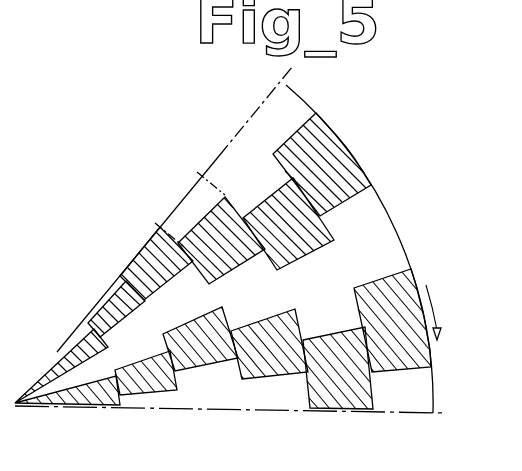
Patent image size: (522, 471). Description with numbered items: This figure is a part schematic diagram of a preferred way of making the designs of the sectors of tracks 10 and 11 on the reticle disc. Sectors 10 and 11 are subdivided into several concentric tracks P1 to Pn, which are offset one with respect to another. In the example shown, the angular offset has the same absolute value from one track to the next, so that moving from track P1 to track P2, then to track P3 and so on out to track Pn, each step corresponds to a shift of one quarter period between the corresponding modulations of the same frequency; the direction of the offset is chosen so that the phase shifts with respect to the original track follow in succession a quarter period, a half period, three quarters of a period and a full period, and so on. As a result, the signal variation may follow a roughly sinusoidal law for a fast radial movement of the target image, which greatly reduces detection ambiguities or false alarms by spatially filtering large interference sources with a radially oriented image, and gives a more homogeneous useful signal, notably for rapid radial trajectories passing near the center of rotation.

The sector of track 10 is at (377, 221).
The sector of track 11 is at (336, 142).
The concentric track P1 is at (56, 366).
The concentric track P2 is at (90, 325).
The concentric track P3 is at (125, 282).
The concentric track Pn is at (266, 146).